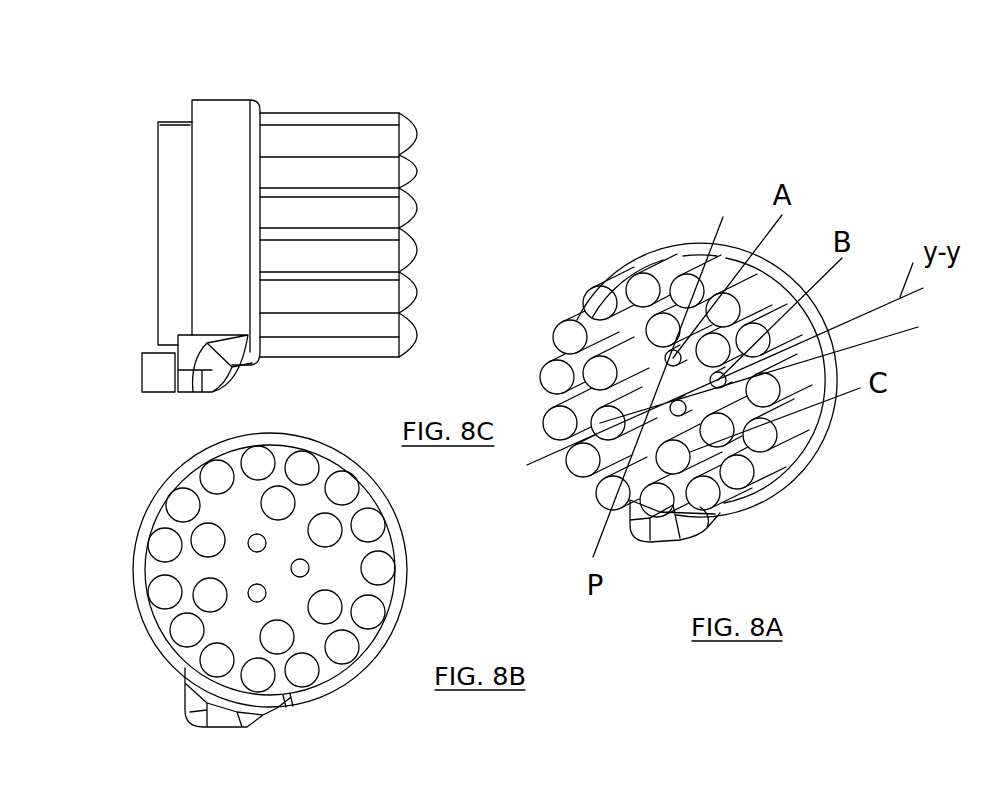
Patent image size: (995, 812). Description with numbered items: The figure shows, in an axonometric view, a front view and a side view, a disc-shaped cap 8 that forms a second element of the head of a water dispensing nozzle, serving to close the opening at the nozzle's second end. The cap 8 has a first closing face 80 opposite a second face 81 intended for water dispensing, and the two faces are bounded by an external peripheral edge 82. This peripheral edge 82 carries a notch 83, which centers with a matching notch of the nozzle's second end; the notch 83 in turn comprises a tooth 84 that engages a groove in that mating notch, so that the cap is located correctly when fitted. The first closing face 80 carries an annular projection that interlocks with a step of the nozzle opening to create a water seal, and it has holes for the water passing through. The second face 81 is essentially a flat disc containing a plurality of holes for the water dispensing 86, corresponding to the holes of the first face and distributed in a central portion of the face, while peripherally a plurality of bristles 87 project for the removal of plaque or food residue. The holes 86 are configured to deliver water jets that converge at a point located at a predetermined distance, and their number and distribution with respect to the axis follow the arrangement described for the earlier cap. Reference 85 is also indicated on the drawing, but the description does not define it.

In FIG. 8C, the disc-shaped cap 8 is at (454, 195).
In FIG. 8B, the disc-shaped cap 8 is at (430, 560).
In FIG. 8A, the disc-shaped cap 8 is at (611, 226).
In FIG. 8C, the first closing face 80 is at (148, 160).
In FIG. 8C, the second face 81 is at (426, 160).
In FIG. 8B, the second face 81 is at (349, 554).
In FIG. 8C, the external peripheral edge 82 is at (228, 86).
In FIG. 8C, the notch 83 is at (188, 388).
In FIG. 8C, the tooth 84 is at (150, 372).
In FIG. 8C, the inner wall 85 is at (173, 307).
In FIG. 8B, the holes for the water dispensing 86 is at (252, 548).
In FIG. 8C, the bristles 87 is at (395, 208).
In FIG. 8B, the bristles 87 is at (370, 613).
In FIG. 8A, the bristles 87 is at (767, 392).